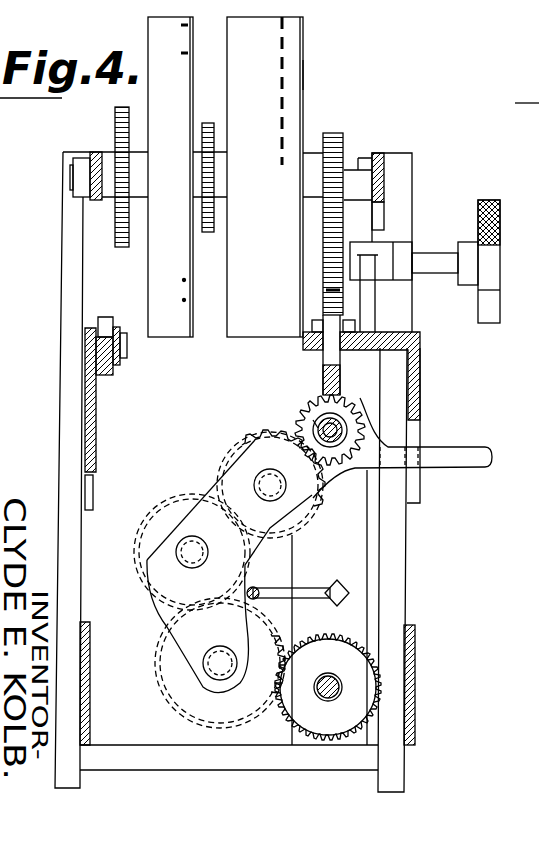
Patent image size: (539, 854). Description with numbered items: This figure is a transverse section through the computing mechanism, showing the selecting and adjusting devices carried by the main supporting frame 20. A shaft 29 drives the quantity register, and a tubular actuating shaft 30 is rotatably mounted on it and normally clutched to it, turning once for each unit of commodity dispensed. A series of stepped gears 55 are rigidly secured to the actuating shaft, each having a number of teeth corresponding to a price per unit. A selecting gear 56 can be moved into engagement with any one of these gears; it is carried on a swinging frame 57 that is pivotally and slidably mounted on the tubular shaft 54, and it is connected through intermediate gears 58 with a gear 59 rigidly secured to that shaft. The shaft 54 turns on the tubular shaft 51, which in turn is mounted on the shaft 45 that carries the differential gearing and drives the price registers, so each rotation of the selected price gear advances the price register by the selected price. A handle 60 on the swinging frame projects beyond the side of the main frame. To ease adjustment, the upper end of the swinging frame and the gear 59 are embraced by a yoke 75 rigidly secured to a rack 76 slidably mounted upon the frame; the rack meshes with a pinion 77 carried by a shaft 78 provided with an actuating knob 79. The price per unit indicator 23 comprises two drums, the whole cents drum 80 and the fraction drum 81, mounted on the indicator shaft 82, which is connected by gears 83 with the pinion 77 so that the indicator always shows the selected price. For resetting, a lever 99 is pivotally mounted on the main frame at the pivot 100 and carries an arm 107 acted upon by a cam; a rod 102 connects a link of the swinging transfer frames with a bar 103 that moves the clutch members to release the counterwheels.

The main supporting frame 20 is at (96, 441).
The price per unit indicator 23 is at (321, 86).
The shaft 29 is at (322, 695).
The actuating shaft 30 is at (328, 676).
The shaft 45 is at (315, 422).
The tubular shaft 51 is at (310, 432).
The tubular shaft 54 is at (298, 437).
The stepped gears 55 is at (349, 637).
The selecting gear 56 is at (192, 697).
The swinging frame 57 is at (180, 606).
The intermediate gears 58 is at (162, 507).
The gear 59 is at (322, 417).
The handle 60 is at (478, 462).
The yoke 75 is at (332, 363).
The rack 76 is at (328, 317).
The pinion 77 is at (328, 288).
The shaft 78 is at (425, 258).
The actuating knob 79 is at (490, 293).
The indicator drum 80 is at (305, 58).
The indicator drum 81 is at (150, 271).
The indicator shaft 82 is at (351, 168).
The gears 83 is at (330, 170).
The lever 99 is at (116, 366).
The pivot 100 is at (128, 353).
The rod 102 is at (268, 591).
The bar 103 is at (321, 639).
The arm 107 is at (107, 378).